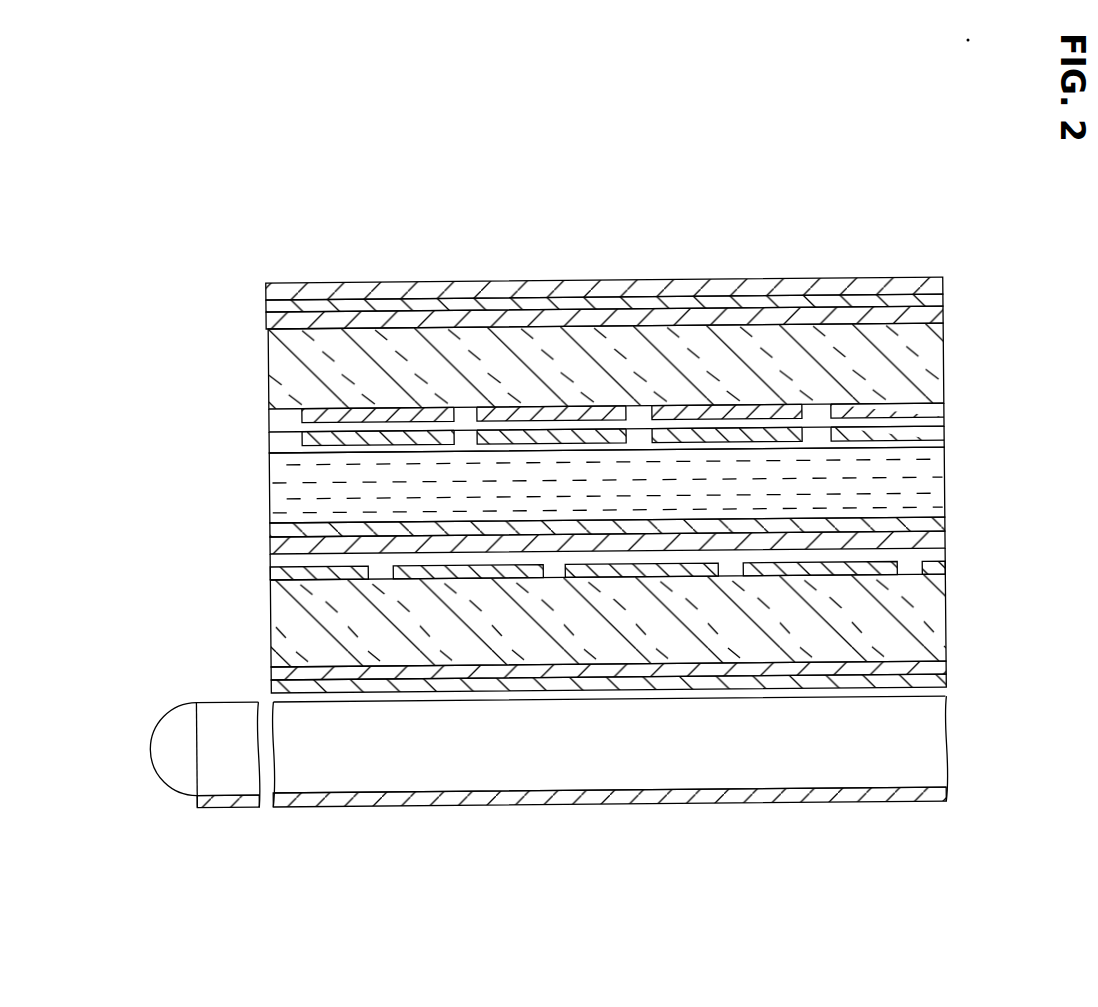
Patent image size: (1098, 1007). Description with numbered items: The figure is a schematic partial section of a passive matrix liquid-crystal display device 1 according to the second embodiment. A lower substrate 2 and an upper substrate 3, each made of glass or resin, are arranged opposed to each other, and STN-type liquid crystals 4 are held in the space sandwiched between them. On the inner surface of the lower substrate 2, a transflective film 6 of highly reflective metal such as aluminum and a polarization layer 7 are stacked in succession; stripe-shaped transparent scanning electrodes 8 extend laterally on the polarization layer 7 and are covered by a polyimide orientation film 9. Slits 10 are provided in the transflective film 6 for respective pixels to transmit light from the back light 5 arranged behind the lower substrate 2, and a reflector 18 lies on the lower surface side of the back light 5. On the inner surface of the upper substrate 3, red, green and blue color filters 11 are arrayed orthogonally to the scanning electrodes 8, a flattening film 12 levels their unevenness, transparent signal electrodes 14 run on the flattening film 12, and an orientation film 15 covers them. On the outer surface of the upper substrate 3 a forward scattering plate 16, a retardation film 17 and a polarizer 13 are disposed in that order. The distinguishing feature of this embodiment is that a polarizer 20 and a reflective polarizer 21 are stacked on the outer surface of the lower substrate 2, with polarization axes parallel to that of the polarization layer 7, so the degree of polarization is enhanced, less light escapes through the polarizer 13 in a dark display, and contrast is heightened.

The liquid-crystal display device 1 is at (902, 270).
The lower substrate 2 is at (932, 622).
The upper substrate 3 is at (928, 373).
The liquid crystals 4 is at (930, 488).
The back light 5 is at (932, 742).
The transflective film 6 is at (262, 580).
The polarization layer 7 is at (935, 565).
The scanning electrodes 8 is at (932, 540).
The orientation film 9 is at (930, 528).
The slits 10 is at (383, 580).
The color filters 11 is at (388, 412).
The flattening film 12 is at (652, 330).
The polarizer 13 is at (940, 290).
The signal electrodes 14 is at (335, 442).
The orientation film 15 is at (652, 345).
The forward scattering plate 16 is at (940, 320).
The retardation film 17 is at (940, 306).
The reflector 18 is at (940, 800).
The polarizer 20 is at (945, 673).
The reflective polarizer 21 is at (945, 687).